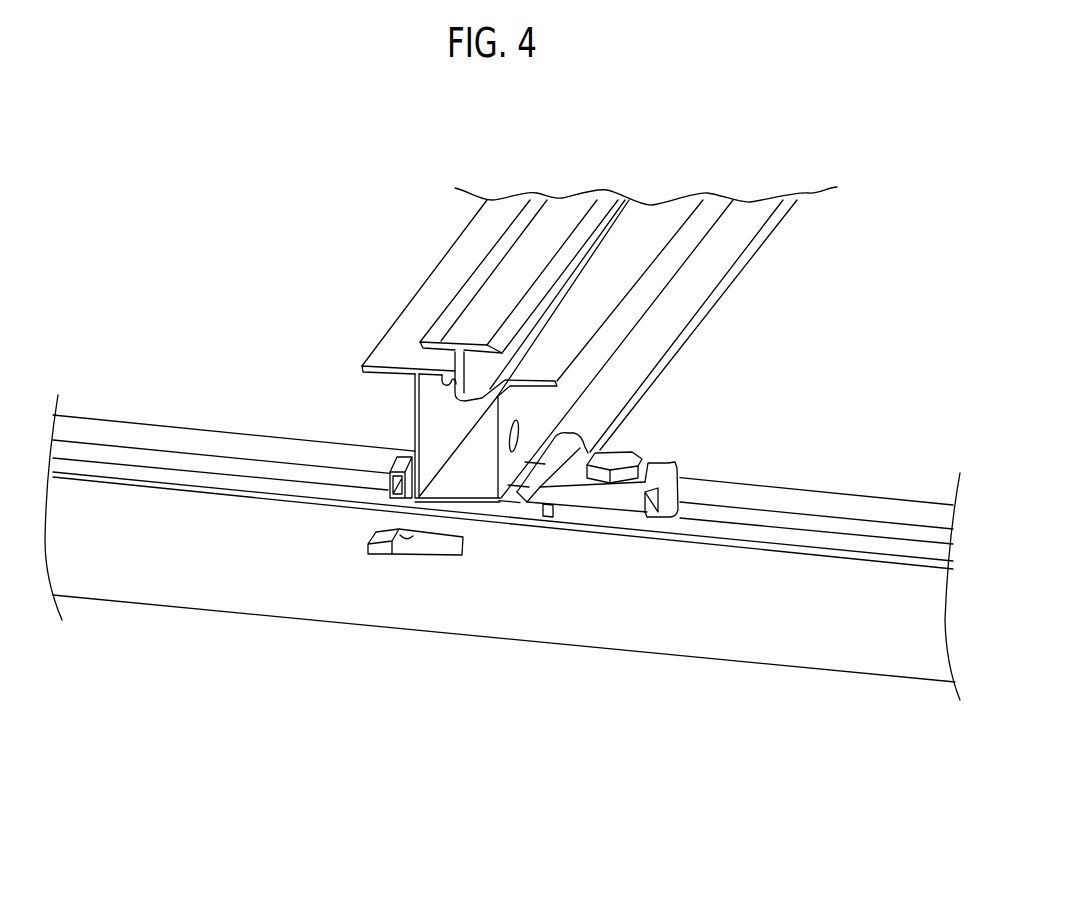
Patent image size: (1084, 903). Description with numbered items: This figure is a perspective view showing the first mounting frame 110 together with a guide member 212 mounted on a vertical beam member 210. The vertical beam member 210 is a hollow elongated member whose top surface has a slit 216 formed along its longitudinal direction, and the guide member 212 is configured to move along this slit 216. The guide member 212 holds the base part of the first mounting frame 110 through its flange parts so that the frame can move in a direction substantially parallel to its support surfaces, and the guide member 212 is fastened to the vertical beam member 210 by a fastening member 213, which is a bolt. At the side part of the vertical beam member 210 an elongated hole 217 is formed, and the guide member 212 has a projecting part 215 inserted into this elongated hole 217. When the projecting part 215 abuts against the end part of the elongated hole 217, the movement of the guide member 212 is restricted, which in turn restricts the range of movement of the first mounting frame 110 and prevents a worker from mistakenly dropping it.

The first mounting frame 110 is at (351, 277).
The vertical beam member 210 is at (887, 496).
The guide member 212 is at (666, 463).
The fastening member 213 is at (630, 457).
The projecting part 215 is at (372, 552).
The slit 216 is at (798, 514).
The elongated hole 217 is at (448, 552).